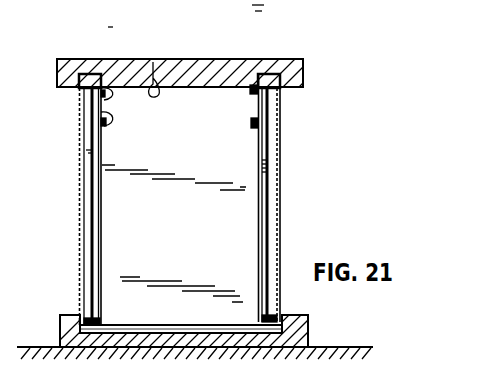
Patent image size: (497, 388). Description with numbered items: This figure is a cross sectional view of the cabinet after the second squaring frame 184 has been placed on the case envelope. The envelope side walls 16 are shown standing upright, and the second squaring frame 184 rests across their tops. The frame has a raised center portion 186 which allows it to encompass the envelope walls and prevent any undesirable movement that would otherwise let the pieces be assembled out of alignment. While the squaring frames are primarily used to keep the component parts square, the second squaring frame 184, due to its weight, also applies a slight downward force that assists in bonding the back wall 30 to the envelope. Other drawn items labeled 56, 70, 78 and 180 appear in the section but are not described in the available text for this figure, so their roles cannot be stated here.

The envelope side wall 16 is at (282, 158).
The back wall 30 is at (138, 326).
The clip 56 is at (268, 74).
The glazing strip 70 is at (95, 226).
The gasket 78 is at (104, 107).
The base sill 180 is at (310, 322).
The second squaring frame 184 is at (296, 69).
The raised center portion 186 is at (153, 62).